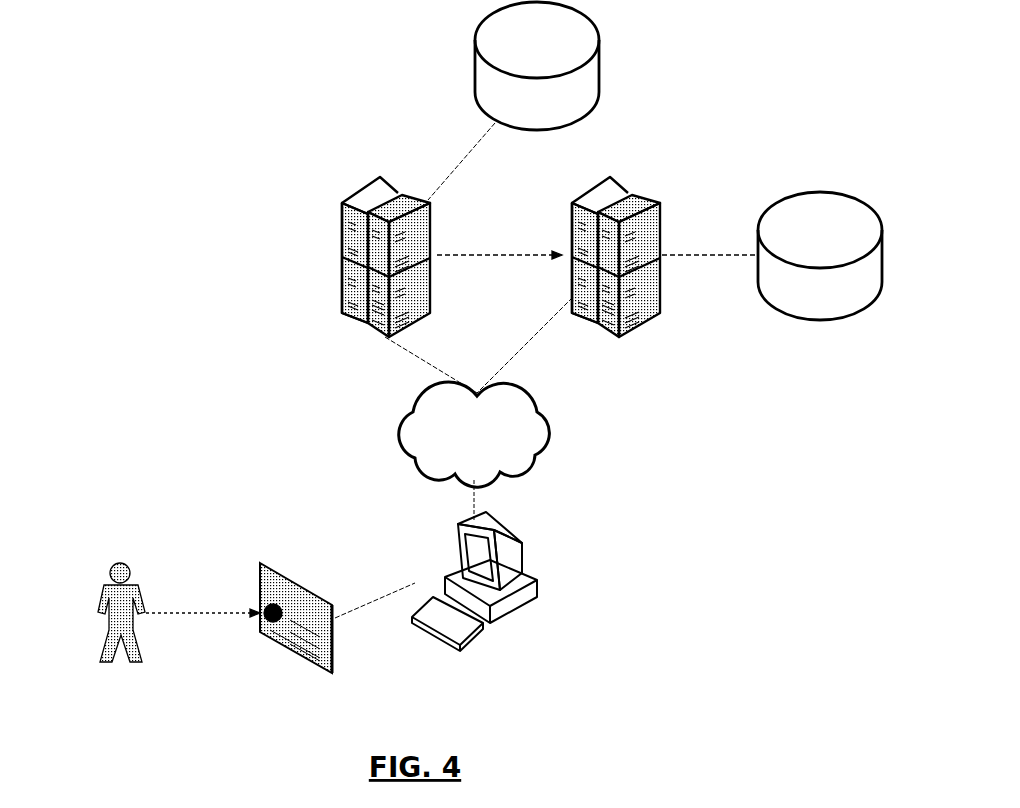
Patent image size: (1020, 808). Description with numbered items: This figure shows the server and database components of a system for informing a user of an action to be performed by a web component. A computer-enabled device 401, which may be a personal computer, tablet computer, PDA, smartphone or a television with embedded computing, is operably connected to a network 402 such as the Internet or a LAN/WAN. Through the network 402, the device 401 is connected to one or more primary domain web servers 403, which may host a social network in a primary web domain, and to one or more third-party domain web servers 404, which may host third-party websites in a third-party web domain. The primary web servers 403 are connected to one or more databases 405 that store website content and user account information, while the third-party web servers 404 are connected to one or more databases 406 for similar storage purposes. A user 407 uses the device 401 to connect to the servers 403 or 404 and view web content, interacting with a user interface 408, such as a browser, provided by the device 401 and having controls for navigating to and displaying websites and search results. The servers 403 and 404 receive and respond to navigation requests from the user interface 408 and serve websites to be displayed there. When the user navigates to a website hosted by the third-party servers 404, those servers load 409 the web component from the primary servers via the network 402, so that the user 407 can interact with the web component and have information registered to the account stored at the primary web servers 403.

The computer-enabled device 401 is at (523, 552).
The network 402 is at (474, 434).
The primary domain web server 403 is at (340, 220).
The third-party domain web server 404 is at (645, 193).
The database 405 is at (537, 66).
The database 406 is at (820, 256).
The user 407 is at (118, 562).
The user interface 408 is at (260, 565).
The load 409 is at (477, 255).